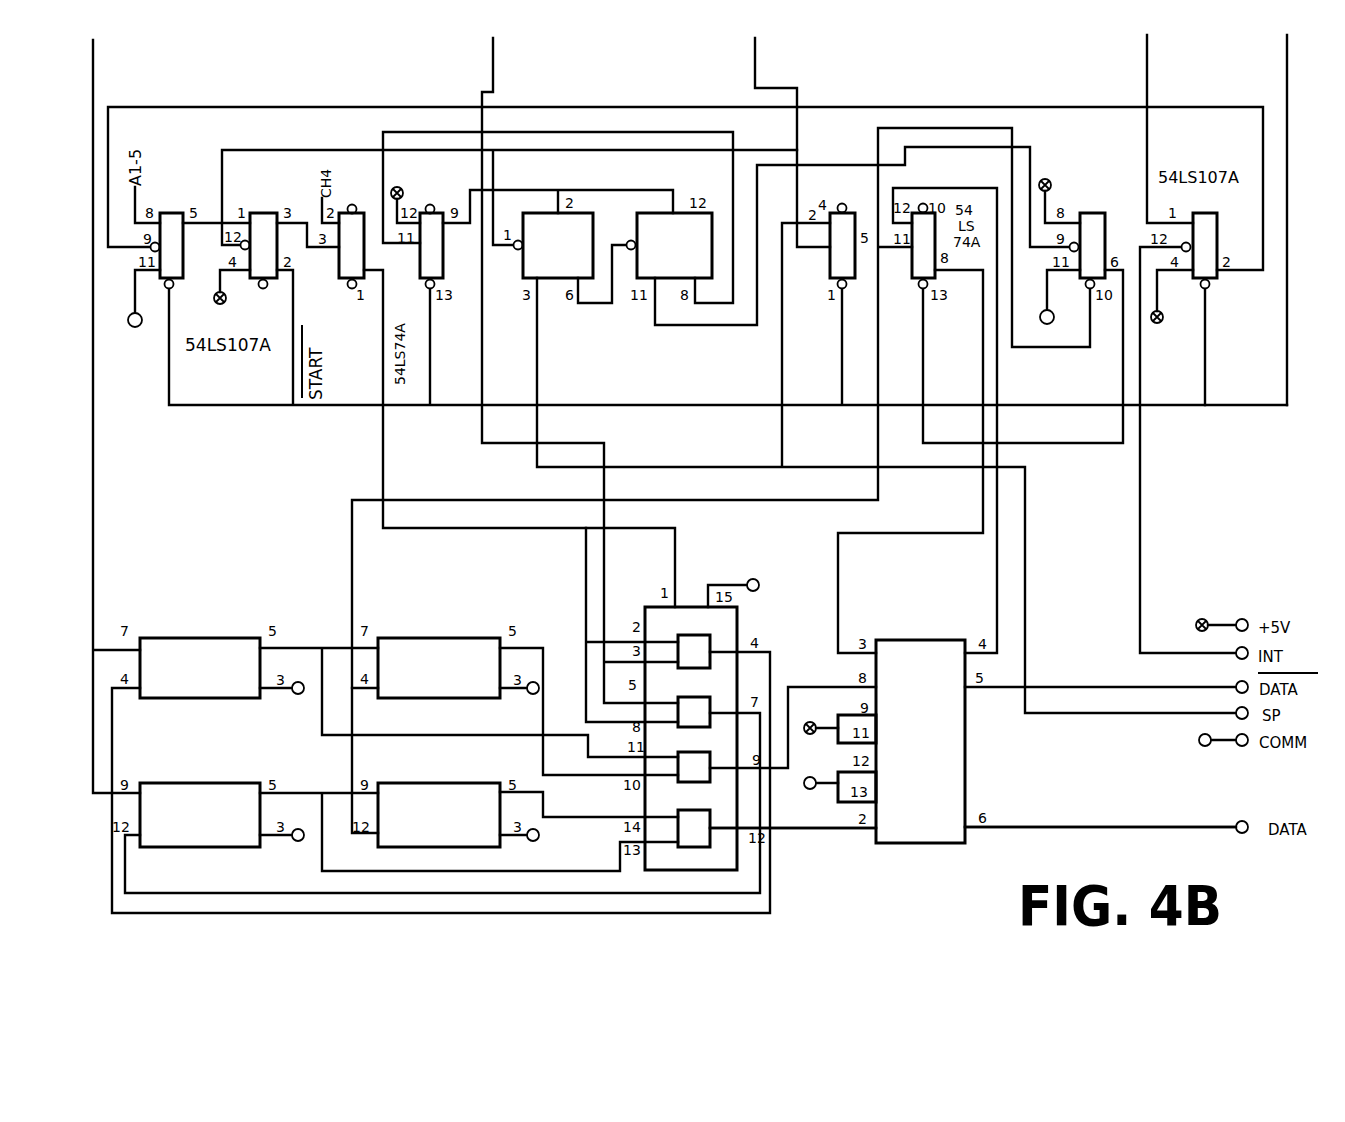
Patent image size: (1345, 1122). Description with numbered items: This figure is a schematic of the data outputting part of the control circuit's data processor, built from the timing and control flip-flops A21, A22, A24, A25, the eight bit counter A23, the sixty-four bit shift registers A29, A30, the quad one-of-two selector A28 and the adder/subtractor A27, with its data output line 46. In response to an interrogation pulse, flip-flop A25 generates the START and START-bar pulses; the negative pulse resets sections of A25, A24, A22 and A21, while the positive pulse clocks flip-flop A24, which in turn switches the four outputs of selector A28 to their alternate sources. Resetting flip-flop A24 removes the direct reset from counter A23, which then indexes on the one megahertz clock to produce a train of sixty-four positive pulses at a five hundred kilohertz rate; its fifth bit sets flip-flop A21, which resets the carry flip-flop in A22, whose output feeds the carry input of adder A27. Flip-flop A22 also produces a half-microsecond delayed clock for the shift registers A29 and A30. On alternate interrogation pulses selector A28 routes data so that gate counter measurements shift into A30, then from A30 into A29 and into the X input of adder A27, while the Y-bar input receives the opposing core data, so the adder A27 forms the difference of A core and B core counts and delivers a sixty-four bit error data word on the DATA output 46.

The data output line from NAND gate A27 46 is at (826, 838).
The flip-flop A21 is at (1148, 229).
The timing and control flip-flop A22 is at (879, 226).
The 8 bit counter A23 is at (618, 226).
The flip-flop A24 is at (391, 276).
The flip-flop A25 is at (218, 231).
The adder/subtractor A27 is at (901, 741).
The quad 1 of 2 selector A28 is at (725, 735).
The 64 bit shift register A29 is at (439, 742).
The 64 bit shift register A30 is at (200, 742).